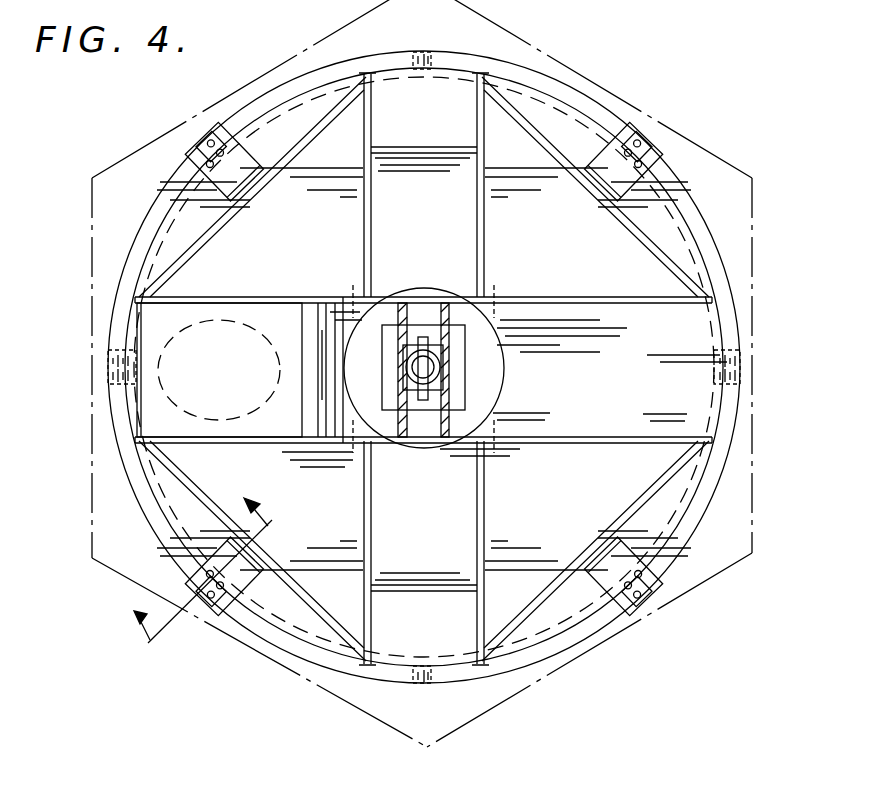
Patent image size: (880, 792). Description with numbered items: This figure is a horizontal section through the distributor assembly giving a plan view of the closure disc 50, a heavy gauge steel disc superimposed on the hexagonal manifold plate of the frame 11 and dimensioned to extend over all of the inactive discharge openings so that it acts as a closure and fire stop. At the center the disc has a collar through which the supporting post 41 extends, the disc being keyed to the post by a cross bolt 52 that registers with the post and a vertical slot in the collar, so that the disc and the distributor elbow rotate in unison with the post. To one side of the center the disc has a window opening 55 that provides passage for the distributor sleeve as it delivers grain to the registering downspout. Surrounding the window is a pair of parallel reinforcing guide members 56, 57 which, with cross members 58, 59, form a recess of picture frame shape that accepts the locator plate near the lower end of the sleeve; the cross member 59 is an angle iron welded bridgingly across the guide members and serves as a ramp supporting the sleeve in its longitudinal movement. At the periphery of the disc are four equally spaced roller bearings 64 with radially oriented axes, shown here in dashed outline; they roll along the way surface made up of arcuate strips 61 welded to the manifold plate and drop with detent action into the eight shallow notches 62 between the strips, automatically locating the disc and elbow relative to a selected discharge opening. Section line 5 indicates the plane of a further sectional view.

The frame 11 is at (478, 727).
The disc 50 is at (133, 243).
The shallow notches 62 is at (425, 50).
The reinforcing guide member 56 is at (266, 296).
The reinforcing guide member 57 is at (272, 445).
The arcuate strips 61 is at (457, 664).
The window opening 55 is at (152, 348).
The cross member 58 is at (132, 393).
The cross member 59 is at (305, 367).
The cross bolt 52 is at (424, 333).
The supporting post 41 is at (447, 358).
The roller bearings 64 is at (195, 151).
The section line 5- 5 is at (216, 585).